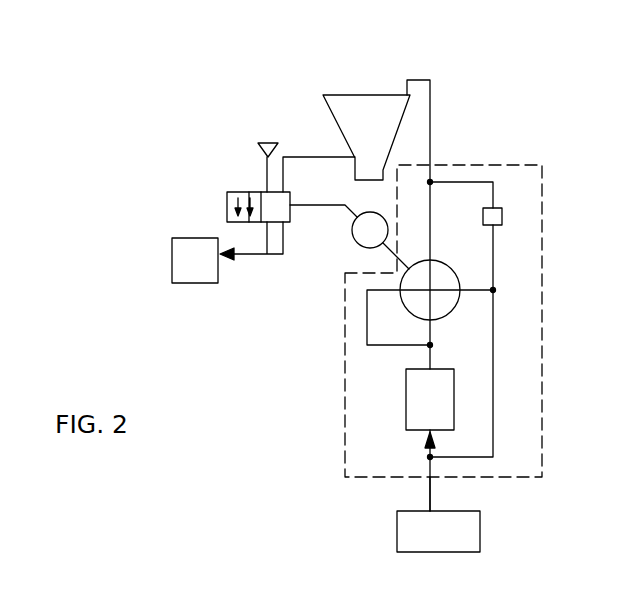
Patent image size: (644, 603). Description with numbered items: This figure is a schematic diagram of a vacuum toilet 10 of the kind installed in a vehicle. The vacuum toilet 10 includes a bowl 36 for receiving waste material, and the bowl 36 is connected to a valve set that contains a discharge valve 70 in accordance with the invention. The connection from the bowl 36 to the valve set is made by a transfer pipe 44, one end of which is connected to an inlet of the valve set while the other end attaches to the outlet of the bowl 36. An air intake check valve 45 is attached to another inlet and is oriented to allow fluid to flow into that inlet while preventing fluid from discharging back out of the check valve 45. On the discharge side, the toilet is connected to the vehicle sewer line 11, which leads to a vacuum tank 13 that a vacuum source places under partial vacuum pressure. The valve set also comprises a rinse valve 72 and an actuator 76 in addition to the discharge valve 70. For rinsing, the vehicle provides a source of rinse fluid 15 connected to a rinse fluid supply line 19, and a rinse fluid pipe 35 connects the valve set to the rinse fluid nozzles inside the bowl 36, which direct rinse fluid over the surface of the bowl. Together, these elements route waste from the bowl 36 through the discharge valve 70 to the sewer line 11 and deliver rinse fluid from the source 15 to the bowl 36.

The vacuum toilet 10 is at (268, 102).
The bowl 36 is at (352, 95).
The rinse fluid pipe 35 is at (431, 140).
The transfer pipe 44 is at (303, 157).
The air intake check valve 45 is at (267, 168).
The discharge valve 70 is at (228, 200).
The sewer line 11 is at (247, 255).
The vacuum tank 13 is at (195, 283).
The actuator 76 is at (355, 233).
The rinse valve 72 is at (340, 458).
The rinse fluid supply line 19 is at (430, 492).
The source of rinse fluid 15 is at (405, 540).